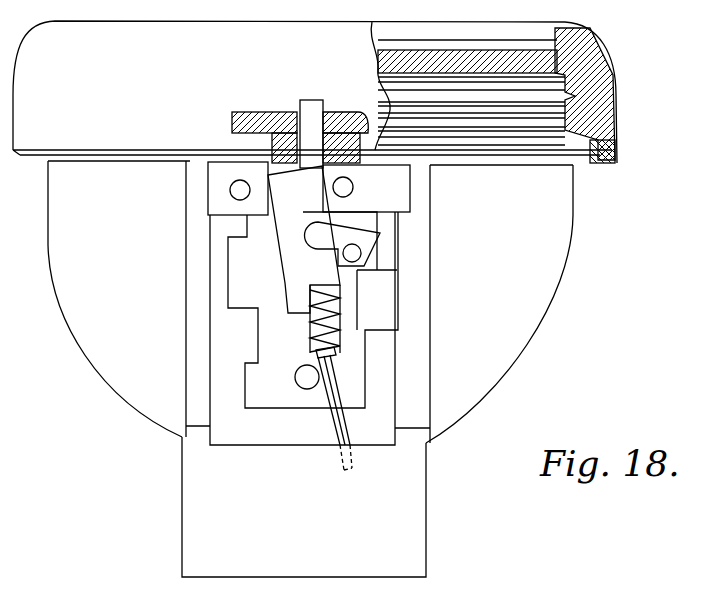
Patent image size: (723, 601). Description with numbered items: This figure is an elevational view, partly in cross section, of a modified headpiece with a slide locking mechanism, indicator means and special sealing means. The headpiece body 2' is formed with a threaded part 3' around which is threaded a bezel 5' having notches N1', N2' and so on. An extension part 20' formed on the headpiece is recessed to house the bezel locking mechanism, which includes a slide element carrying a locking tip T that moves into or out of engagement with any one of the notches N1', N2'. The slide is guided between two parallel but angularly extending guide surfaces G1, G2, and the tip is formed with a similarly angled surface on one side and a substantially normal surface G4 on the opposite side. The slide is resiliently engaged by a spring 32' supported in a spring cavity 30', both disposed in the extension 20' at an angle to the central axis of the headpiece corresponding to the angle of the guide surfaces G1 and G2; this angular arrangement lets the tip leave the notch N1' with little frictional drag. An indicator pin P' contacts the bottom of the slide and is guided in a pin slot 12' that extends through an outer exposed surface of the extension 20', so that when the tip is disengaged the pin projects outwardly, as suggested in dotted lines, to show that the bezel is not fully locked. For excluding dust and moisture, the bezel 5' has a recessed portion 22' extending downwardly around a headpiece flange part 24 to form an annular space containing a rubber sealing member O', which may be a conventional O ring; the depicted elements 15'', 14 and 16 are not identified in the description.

The bezel 5' is at (329, 92).
The threaded part 3' is at (510, 97).
The recessed portion 22' is at (632, 181).
The headpiece flange part 24 is at (590, 170).
The rubber sealing member O' is at (510, 187).
The headpiece body 2' is at (319, 302).
The extension part 20' is at (331, 507).
The substantially normal surface G4 is at (258, 93).
The locking tip T is at (307, 108).
The notch N1' is at (255, 112).
The notch N2' is at (345, 110).
The guide surface G2 is at (335, 203).
The plate 15'' is at (245, 188).
The guide surface G1 is at (270, 253).
The link 14 is at (335, 245).
The pivot boss 16 is at (378, 250).
The spring cavity 30' is at (349, 319).
The spring 32' is at (299, 347).
The pin slot 12' is at (390, 400).
The indicator pin P' is at (309, 440).